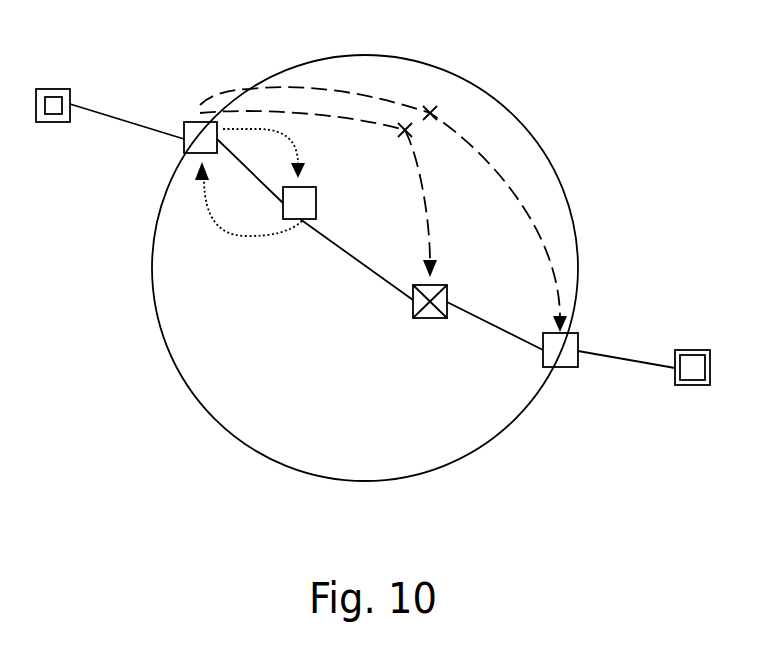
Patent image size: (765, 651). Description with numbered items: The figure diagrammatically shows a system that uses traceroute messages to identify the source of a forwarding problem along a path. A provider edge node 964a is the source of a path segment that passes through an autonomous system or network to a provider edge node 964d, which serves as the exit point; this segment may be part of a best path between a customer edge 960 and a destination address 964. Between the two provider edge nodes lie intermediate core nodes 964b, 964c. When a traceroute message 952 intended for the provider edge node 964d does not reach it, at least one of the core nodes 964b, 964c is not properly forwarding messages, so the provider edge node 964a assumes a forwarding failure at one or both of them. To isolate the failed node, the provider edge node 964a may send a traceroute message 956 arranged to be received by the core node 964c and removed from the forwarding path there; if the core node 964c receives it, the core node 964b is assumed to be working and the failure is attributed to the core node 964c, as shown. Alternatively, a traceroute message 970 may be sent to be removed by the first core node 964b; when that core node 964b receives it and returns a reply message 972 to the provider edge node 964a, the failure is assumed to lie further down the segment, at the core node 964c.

The traceroute message 952 is at (540, 228).
The traceroute message 956 is at (305, 117).
The customer edge 960 is at (52, 89).
The destination address 964 is at (693, 350).
The provider edge node 964a is at (185, 148).
The core node 964b is at (317, 197).
The core node 964c is at (432, 319).
The provider edge node 964d is at (568, 367).
The traceroute message 970 is at (240, 128).
The reply message 972 is at (201, 187).